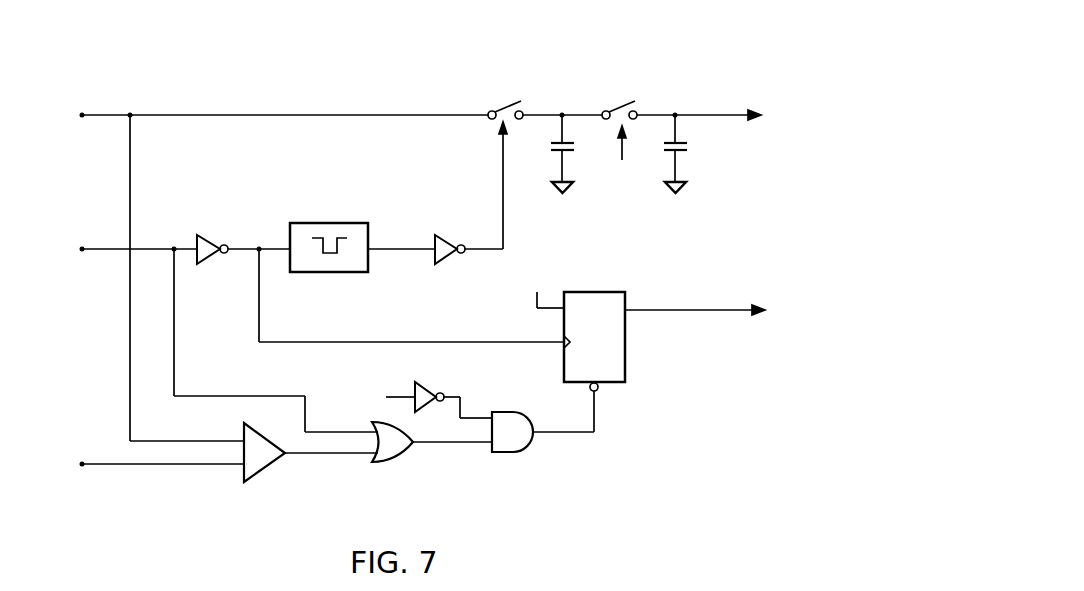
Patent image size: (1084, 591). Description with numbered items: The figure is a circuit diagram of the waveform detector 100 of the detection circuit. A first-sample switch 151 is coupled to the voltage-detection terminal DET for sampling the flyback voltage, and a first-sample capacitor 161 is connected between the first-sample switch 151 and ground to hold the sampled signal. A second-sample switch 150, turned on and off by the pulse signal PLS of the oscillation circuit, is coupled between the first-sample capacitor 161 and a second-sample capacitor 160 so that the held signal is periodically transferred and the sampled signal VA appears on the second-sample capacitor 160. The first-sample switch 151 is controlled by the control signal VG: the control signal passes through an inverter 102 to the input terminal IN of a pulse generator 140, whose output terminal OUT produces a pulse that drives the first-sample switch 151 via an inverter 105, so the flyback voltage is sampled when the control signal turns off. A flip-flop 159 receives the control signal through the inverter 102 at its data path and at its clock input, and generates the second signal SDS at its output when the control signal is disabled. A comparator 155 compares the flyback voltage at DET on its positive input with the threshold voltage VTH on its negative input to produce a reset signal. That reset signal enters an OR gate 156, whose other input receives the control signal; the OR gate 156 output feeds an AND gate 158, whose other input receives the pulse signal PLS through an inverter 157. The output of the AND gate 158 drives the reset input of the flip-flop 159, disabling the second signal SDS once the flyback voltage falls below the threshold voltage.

The waveform detector 100 is at (845, 21).
The inverter 102 is at (208, 263).
The inverter 105 is at (447, 257).
The pulse generator 140 is at (341, 221).
The second-sample switch 150 is at (622, 99).
The first-sample switch 151 is at (508, 99).
The comparator 155 is at (268, 467).
The OR gate 156 is at (398, 458).
The inverter 157 is at (432, 388).
The AND gate 158 is at (532, 447).
The flip-flop 159 is at (627, 365).
The second-sample capacitor 160 is at (678, 150).
The first-sample capacitor 161 is at (565, 150).